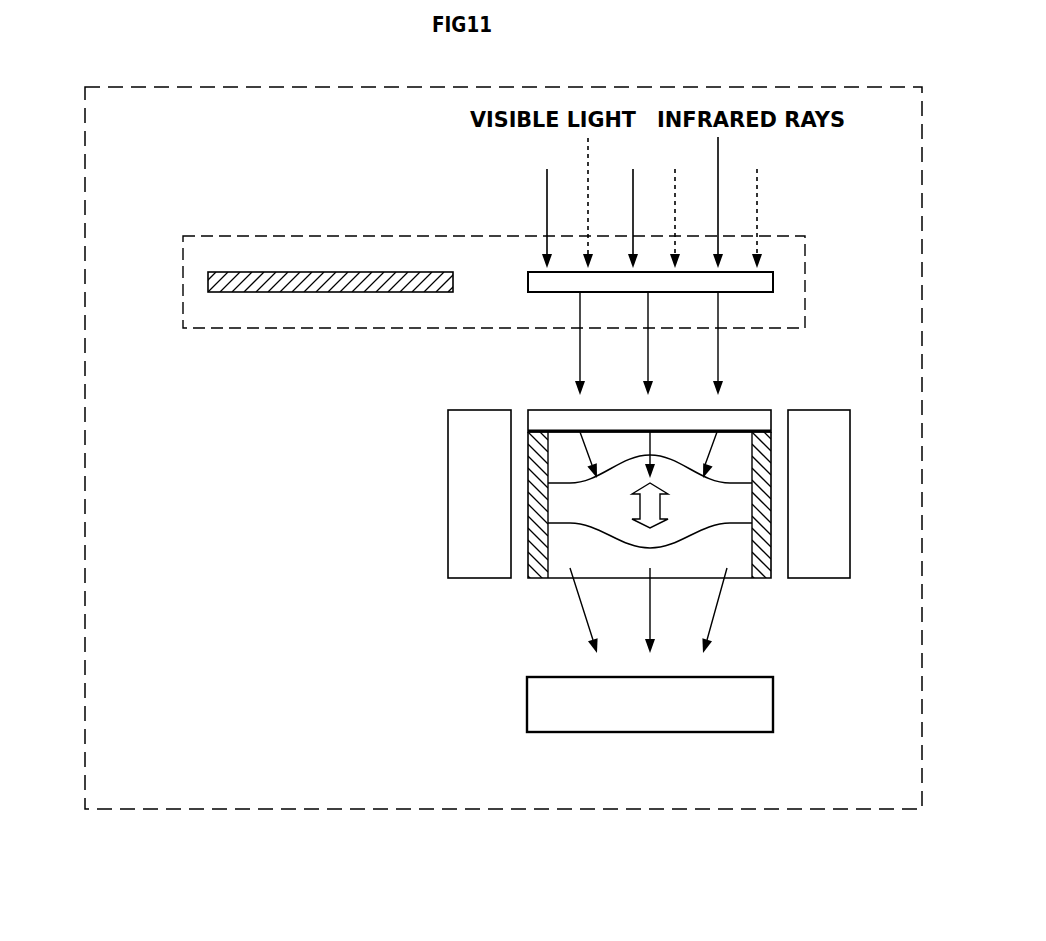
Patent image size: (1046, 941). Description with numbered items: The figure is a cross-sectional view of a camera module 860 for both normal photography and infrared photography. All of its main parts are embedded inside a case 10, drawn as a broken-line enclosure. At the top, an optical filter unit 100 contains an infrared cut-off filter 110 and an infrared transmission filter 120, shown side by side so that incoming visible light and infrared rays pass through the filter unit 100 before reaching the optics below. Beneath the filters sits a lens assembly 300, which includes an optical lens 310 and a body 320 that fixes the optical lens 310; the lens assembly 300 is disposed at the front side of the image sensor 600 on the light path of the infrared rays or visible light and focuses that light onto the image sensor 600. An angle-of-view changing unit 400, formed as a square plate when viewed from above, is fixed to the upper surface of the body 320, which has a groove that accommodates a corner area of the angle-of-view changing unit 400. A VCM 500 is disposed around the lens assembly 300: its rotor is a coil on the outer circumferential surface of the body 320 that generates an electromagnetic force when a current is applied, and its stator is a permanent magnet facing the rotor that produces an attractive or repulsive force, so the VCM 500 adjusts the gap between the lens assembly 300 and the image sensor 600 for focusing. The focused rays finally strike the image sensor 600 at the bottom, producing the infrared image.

The case 10 is at (85, 323).
The camera module 860 is at (232, 200).
The optical filter unit 100 is at (365, 236).
The infrared cut-off filter 110 is at (208, 281).
The infrared transmission filter 120 is at (767, 292).
The angle-of-view changing unit 400 is at (545, 412).
The lens assembly 300 is at (540, 557).
The optical lens 310 is at (707, 505).
The body 320 is at (765, 570).
The VCM 500 is at (448, 487).
The image sensor 600 is at (527, 700).